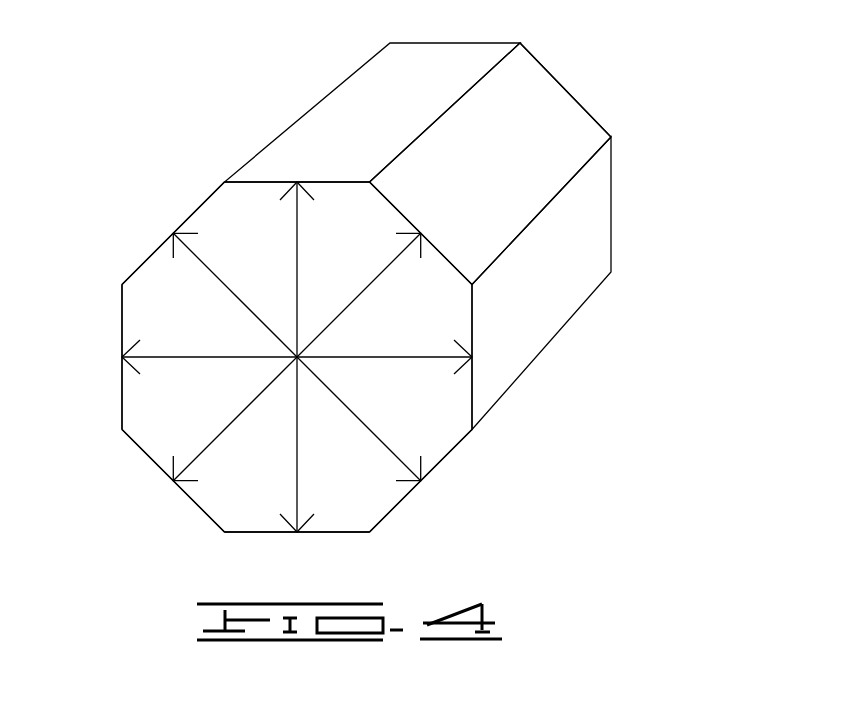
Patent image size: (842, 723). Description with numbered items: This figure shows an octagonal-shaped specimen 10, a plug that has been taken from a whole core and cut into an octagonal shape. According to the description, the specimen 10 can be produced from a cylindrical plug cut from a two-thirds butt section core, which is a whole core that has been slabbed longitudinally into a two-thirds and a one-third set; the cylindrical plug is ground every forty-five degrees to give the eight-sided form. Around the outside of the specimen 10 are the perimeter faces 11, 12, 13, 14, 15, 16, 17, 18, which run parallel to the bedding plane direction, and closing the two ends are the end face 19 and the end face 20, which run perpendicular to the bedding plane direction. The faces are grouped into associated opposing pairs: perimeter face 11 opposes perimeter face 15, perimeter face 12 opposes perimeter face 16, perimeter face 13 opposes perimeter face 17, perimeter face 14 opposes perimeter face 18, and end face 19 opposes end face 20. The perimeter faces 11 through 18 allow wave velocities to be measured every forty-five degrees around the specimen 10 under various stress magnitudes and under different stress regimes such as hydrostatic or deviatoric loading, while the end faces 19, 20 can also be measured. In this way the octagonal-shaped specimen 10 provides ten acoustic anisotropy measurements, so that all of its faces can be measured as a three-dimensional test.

The octagonal-shaped specimen 10 is at (401, 291).
The perimeter face 11 is at (367, 85).
The perimeter face 12 is at (547, 163).
The perimeter face 13 is at (583, 249).
The perimeter face 14 is at (458, 446).
The perimeter face 15 is at (238, 535).
The perimeter face 16 is at (127, 440).
The perimeter face 17 is at (120, 318).
The perimeter face 18 is at (197, 205).
The end face 19 is at (248, 222).
The end face 20 is at (555, 55).